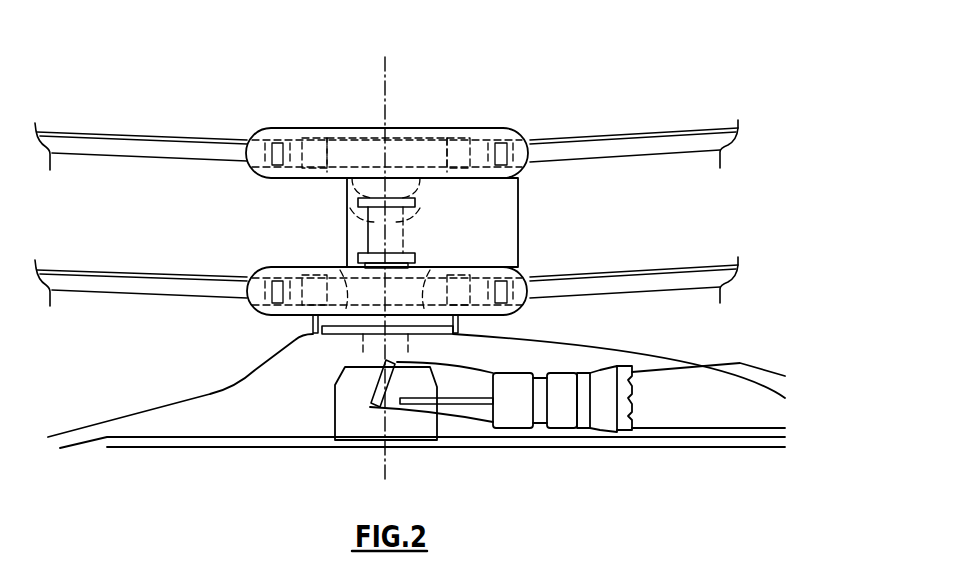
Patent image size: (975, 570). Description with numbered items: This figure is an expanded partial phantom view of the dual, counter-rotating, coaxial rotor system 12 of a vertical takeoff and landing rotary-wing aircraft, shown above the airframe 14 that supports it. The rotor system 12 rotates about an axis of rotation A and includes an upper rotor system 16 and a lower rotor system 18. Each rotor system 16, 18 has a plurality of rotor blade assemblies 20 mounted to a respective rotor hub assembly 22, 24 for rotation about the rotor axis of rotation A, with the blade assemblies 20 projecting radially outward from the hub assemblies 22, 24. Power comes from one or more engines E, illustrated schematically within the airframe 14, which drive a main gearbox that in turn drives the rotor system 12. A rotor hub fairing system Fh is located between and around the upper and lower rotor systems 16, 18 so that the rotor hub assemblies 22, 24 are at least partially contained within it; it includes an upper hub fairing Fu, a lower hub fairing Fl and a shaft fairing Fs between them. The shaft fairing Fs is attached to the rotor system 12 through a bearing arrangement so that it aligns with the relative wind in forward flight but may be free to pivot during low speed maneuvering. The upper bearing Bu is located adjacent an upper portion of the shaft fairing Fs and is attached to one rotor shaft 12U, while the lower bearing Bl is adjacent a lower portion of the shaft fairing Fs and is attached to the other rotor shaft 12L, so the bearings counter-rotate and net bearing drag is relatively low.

The dual, counter-rotating, coaxial rotor system 12 is at (240, 328).
The rotor shaft 12U is at (386, 148).
The rotor shaft 12L is at (386, 292).
The airframe 14 is at (203, 437).
The upper rotor system 16 is at (553, 121).
The lower rotor system 18 is at (537, 262).
The rotor blade assemblies 20 is at (647, 148).
The rotor hub assembly 22 is at (408, 150).
The rotor hub assembly 24 is at (410, 305).
The axis of rotation A is at (388, 70).
The engine E is at (513, 413).
The upper bearing Bu is at (417, 200).
The lower bearing Bl is at (417, 255).
The upper hub fairing Fu is at (318, 118).
The lower hub fairing Fl is at (276, 258).
The rotor hub fairing system Fh is at (250, 205).
The shaft fairing Fs is at (507, 215).